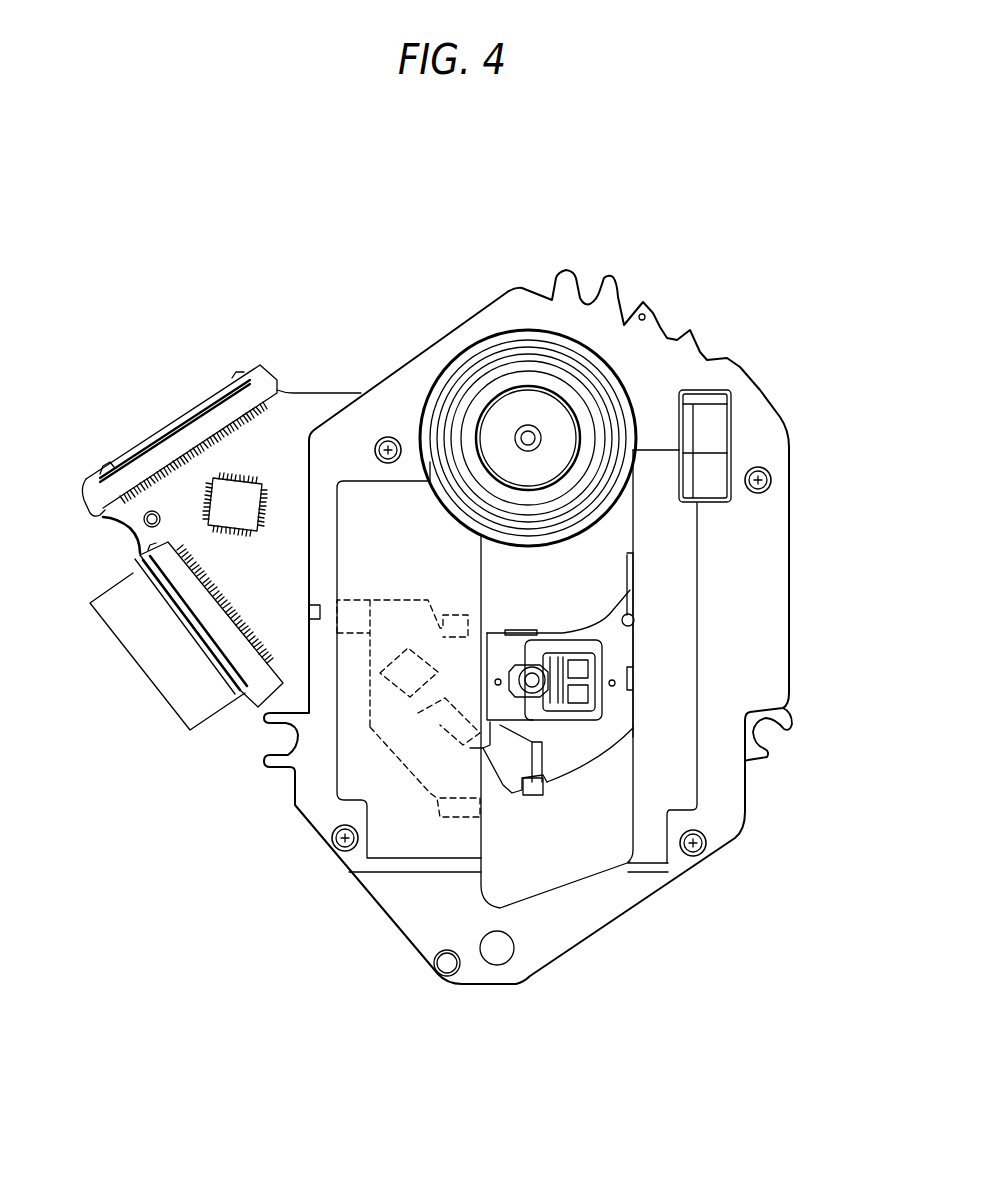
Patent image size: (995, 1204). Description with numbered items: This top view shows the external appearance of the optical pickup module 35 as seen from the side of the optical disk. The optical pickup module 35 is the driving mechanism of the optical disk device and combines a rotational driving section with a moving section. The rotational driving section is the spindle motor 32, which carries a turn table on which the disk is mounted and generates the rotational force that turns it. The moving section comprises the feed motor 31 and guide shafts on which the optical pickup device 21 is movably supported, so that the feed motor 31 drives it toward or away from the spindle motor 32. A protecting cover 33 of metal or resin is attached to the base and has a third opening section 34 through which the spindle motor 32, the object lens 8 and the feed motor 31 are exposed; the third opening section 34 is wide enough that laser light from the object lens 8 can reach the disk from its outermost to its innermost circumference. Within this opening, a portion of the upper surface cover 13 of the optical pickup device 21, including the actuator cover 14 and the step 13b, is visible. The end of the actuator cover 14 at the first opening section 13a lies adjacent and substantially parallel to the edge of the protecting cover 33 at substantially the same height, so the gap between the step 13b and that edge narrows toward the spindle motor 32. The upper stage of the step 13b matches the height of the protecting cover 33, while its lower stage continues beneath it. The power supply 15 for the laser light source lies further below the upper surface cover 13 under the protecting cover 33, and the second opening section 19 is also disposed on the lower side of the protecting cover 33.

The optical pickup module 35 is at (396, 205).
The spindle motor 32 is at (493, 435).
The feed motor 31 is at (708, 423).
The object lens 8 is at (590, 647).
The actuator cover 14 is at (622, 642).
The upper surface cover 13 is at (492, 790).
The first opening section 13a is at (437, 728).
The step 13b is at (518, 800).
The optical pickup device 21 is at (565, 780).
The protecting cover 33 is at (685, 795).
The third opening section 34 is at (500, 866).
The power supply 15 is at (372, 692).
The second opening section 19 is at (405, 685).